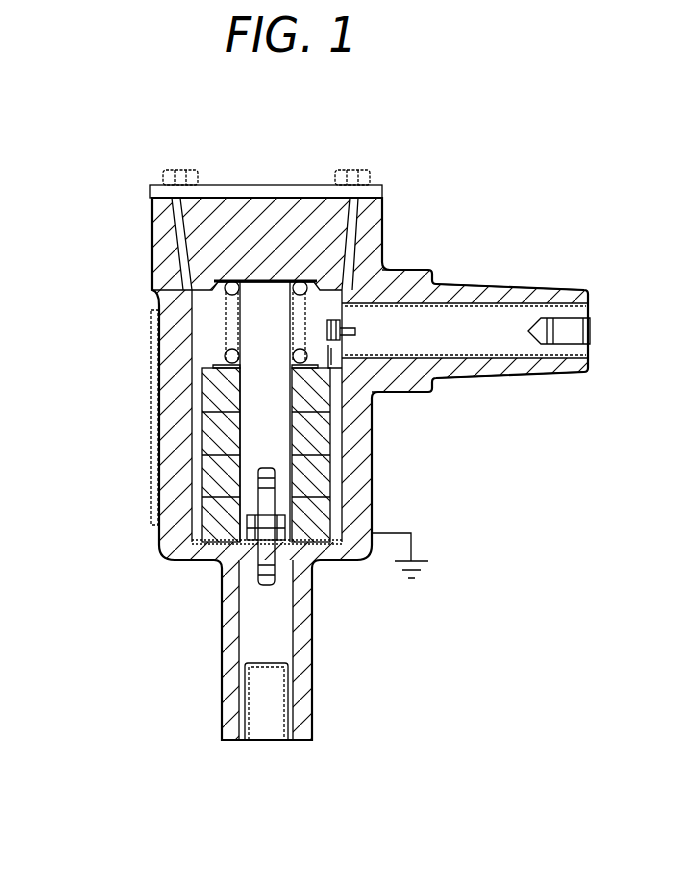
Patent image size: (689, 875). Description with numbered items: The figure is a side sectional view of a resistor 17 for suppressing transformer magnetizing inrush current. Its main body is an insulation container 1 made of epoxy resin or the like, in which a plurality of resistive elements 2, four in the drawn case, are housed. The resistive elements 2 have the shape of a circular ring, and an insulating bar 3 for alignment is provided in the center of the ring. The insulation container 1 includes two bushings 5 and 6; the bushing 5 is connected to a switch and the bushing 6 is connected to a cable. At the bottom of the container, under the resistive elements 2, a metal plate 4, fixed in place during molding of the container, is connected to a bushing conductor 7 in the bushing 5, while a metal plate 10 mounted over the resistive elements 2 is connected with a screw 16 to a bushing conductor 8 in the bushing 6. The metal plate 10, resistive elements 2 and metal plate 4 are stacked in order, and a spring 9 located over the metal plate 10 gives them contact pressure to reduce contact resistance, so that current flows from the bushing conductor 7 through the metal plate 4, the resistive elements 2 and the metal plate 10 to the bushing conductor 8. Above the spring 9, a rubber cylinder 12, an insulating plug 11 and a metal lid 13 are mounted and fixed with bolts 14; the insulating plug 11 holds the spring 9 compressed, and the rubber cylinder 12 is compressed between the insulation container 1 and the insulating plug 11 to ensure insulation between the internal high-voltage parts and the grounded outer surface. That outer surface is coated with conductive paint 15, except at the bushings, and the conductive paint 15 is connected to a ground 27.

The insulation container 1 is at (178, 307).
The resistive elements 2 is at (212, 432).
The insulating bar 3 is at (250, 473).
The metal plate 4 is at (182, 560).
The bushing 5 is at (233, 686).
The bushing 6 is at (463, 287).
The bushing conductor 7 is at (257, 708).
The bushing conductor 8 is at (510, 330).
The spring 9 is at (232, 328).
The metal plate 10 is at (346, 360).
The insulating plug 11 is at (229, 212).
The rubber cylinder 12 is at (180, 225).
The metal lid 13 is at (270, 191).
The bolts 14 is at (350, 225).
The conductive paint 15 is at (375, 495).
The screw 16 is at (340, 335).
The resistor 17 is at (163, 247).
The ground 27 is at (413, 560).